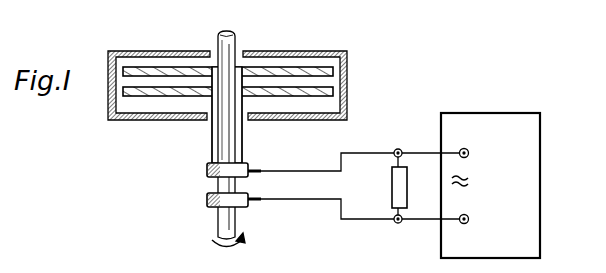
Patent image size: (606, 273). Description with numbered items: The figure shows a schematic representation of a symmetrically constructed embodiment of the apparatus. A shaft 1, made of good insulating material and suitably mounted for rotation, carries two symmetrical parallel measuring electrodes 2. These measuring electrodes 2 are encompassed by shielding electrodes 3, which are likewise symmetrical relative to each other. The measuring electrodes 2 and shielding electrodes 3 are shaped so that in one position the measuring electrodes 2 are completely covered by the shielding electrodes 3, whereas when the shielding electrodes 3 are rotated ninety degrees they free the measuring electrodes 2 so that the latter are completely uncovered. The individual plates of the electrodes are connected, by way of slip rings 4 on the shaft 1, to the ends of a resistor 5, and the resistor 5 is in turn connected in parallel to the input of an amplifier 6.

The shaft 1 is at (233, 43).
The measuring electrodes 2 is at (330, 86).
The shielding electrodes 3 is at (312, 49).
The slip rings 4 is at (207, 170).
The resistor 5 is at (392, 181).
The amplifier 6 is at (525, 170).